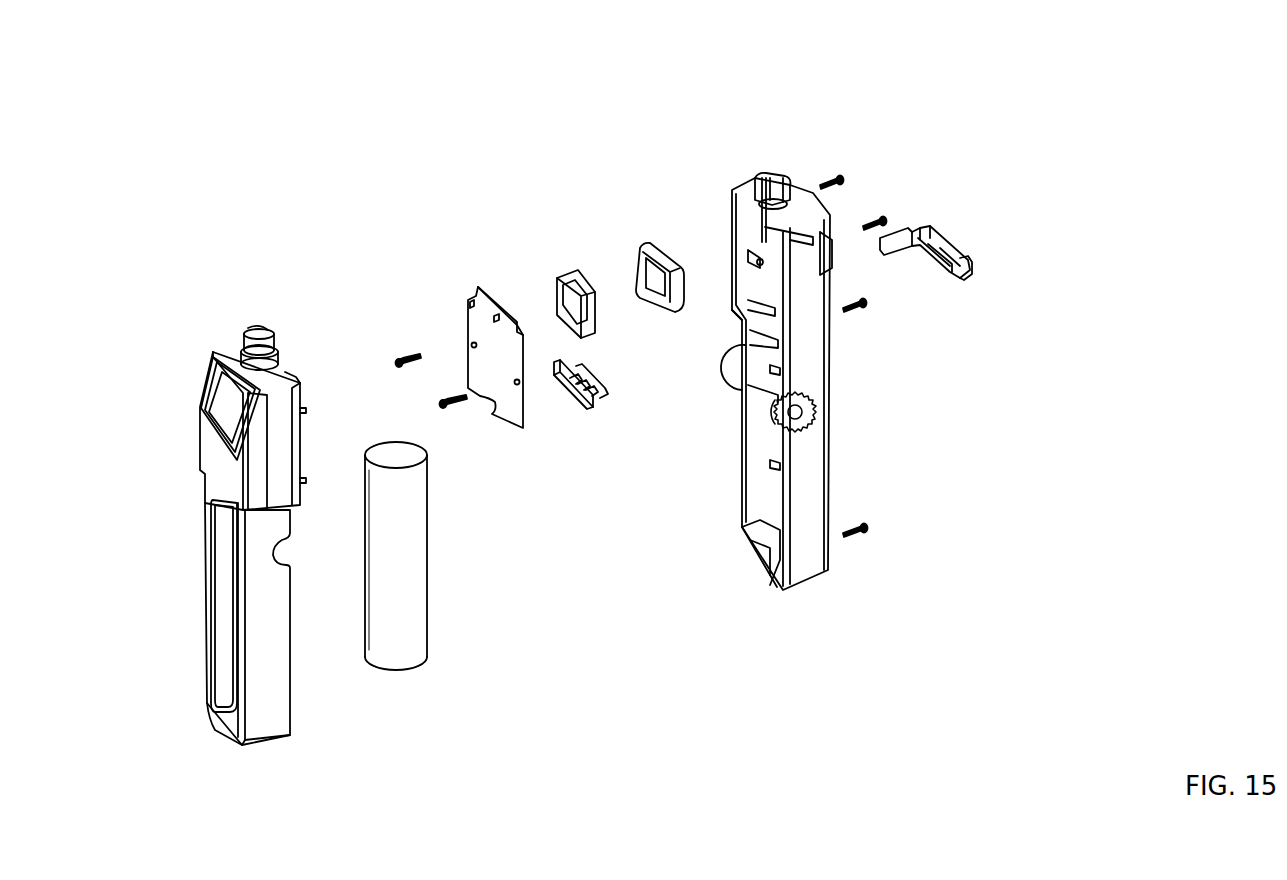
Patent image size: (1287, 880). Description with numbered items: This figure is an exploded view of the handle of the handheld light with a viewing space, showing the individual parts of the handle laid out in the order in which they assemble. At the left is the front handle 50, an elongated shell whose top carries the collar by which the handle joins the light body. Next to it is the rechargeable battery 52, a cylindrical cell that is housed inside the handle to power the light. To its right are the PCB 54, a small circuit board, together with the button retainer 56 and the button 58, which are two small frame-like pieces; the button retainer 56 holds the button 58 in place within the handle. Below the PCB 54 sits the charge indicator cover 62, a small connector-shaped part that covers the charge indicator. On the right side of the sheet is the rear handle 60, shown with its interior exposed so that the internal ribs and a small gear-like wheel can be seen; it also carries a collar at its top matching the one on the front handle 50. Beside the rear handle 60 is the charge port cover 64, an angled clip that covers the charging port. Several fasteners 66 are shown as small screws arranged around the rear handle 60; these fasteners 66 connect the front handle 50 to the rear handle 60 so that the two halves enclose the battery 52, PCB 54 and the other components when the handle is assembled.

The front handle 50 is at (260, 325).
The rechargeable battery 52 is at (388, 440).
The PCB 54 is at (480, 285).
The button retainer 56 is at (563, 266).
The button 58 is at (646, 236).
The rear handle 60 is at (752, 175).
The charge indicator cover 62 is at (588, 410).
The charge port cover 64 is at (958, 283).
The fasteners 66 is at (866, 535).